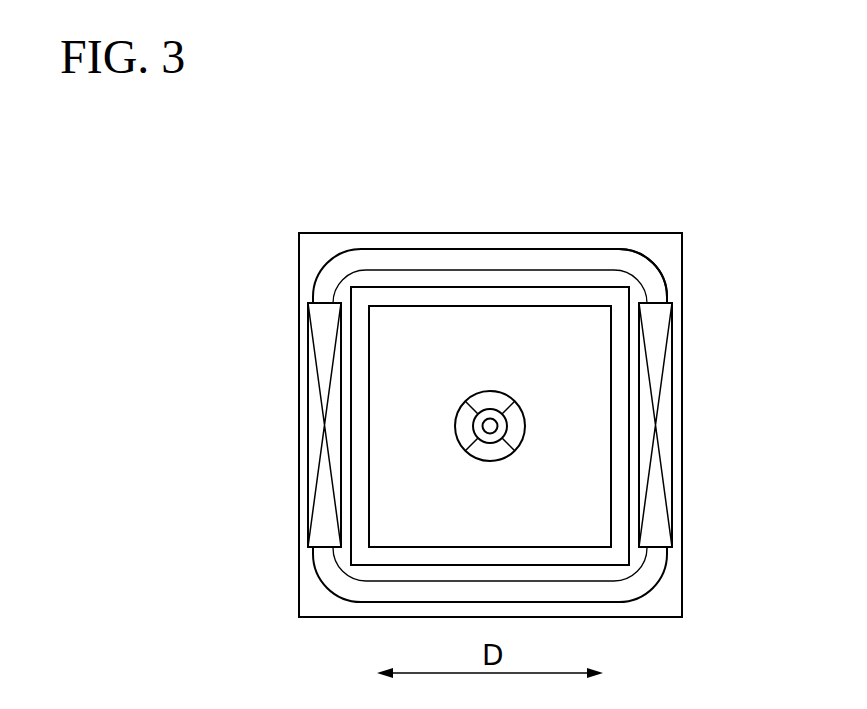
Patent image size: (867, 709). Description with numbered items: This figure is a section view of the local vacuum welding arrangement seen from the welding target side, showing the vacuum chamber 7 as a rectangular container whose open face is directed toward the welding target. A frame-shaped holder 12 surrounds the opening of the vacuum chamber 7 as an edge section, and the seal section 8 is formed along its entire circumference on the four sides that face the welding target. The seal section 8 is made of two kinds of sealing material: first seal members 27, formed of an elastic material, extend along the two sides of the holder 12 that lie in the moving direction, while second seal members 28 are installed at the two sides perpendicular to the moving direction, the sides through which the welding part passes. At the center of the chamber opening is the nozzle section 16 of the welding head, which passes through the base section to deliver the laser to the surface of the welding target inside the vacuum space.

The holder 12 is at (313, 252).
The first seal members 27 is at (497, 257).
The seal section 8 is at (660, 270).
The vacuum chamber 7 is at (577, 299).
The second seal members 28 is at (325, 363).
The nozzle section 16 is at (515, 421).